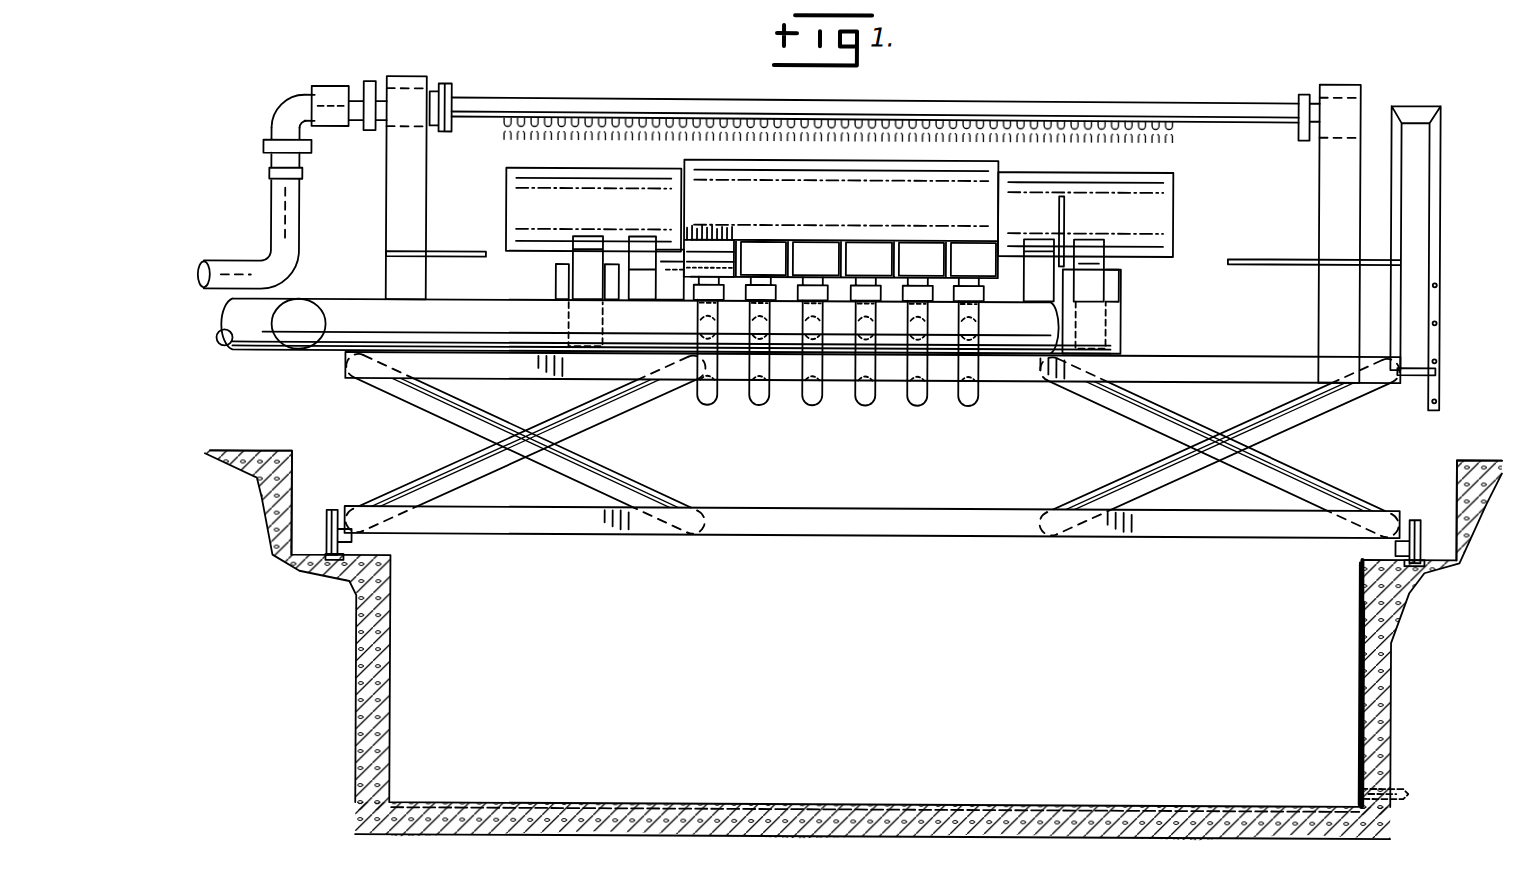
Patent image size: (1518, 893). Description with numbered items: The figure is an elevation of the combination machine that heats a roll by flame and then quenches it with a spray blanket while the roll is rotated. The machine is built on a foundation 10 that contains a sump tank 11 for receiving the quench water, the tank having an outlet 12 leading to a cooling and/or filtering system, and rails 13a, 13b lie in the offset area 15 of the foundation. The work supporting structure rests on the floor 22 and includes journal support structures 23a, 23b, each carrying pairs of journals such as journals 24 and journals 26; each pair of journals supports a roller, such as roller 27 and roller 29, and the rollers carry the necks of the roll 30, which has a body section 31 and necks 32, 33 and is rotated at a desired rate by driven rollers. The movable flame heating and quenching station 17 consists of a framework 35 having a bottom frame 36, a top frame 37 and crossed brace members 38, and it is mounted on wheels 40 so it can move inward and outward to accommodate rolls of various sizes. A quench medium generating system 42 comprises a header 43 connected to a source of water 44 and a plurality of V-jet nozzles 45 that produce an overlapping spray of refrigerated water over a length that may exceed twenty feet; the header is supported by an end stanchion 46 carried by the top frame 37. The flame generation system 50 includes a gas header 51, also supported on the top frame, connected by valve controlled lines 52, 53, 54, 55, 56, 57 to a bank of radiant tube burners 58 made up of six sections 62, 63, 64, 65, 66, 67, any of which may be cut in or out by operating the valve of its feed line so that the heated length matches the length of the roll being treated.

The foundation 10 is at (1380, 675).
The sump tank 11 is at (1358, 680).
The outlet 12 is at (1395, 788).
The rail 13a is at (338, 560).
The rail 13b is at (1412, 565).
The offset area 15 is at (295, 465).
The flame heating and quenching station 17 is at (810, 220).
The floor 22 is at (1478, 460).
The journal support structure 23a is at (1115, 345).
The journal support structure 23b is at (555, 322).
The journals 24 is at (1072, 288).
The journals 26 is at (608, 282).
The roller 27 is at (1078, 262).
The roller 29 is at (580, 238).
The roll 30 is at (865, 173).
The body section 31 is at (878, 160).
The neck 32 is at (617, 183).
The neck 33 is at (1160, 175).
The framework 35 is at (873, 445).
The bottom frame 36 is at (960, 508).
The top frame 37 is at (1025, 382).
The crossed brace members 38 is at (1118, 480).
The wheels 40 is at (333, 512).
The quench medium generating system 42 is at (289, 100).
The header 43 is at (612, 100).
The source of water 44 is at (216, 262).
The V-jet nozzles 45 is at (512, 137).
The end stanchion 46 is at (1345, 83).
The flame generation system 50 is at (812, 376).
The gas header 51 is at (245, 350).
The valve controlled line 52 is at (700, 405).
The valve controlled line 53 is at (760, 408).
The valve controlled line 54 is at (812, 408).
The valve controlled line 55 is at (865, 408).
The valve controlled line 56 is at (917, 408).
The valve controlled line 57 is at (968, 408).
The bank of radiant tube burners 58 is at (682, 224).
The burner section 62 is at (710, 248).
The burner section 63 is at (762, 248).
The burner section 64 is at (815, 248).
The burner section 65 is at (866, 248).
The burner section 66 is at (918, 248).
The burner section 67 is at (968, 248).